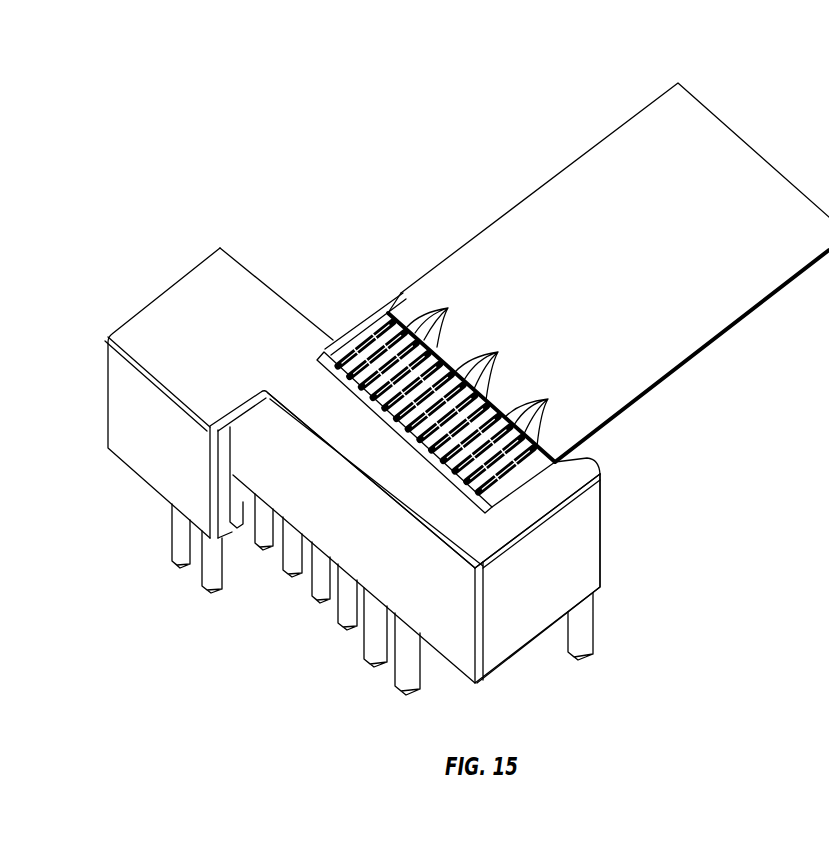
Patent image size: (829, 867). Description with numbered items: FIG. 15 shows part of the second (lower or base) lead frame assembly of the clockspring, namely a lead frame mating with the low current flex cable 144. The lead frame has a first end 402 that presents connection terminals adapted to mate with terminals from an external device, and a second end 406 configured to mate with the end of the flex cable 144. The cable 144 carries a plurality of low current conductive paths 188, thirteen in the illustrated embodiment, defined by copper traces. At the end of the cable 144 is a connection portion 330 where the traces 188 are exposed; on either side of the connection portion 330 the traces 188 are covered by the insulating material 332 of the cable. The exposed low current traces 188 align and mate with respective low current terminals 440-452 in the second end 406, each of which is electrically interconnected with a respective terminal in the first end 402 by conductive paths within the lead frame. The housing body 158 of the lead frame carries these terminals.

The low current flex cable 144 is at (742, 162).
The low current conductive path 188 is at (496, 370).
The low current connection terminals 440-452 is at (364, 330).
The insulating material 332 is at (318, 359).
The connection portion 330 is at (535, 482).
The second end 406 is at (521, 518).
The connector housing 158 is at (588, 564).
The first end 402 is at (544, 686).